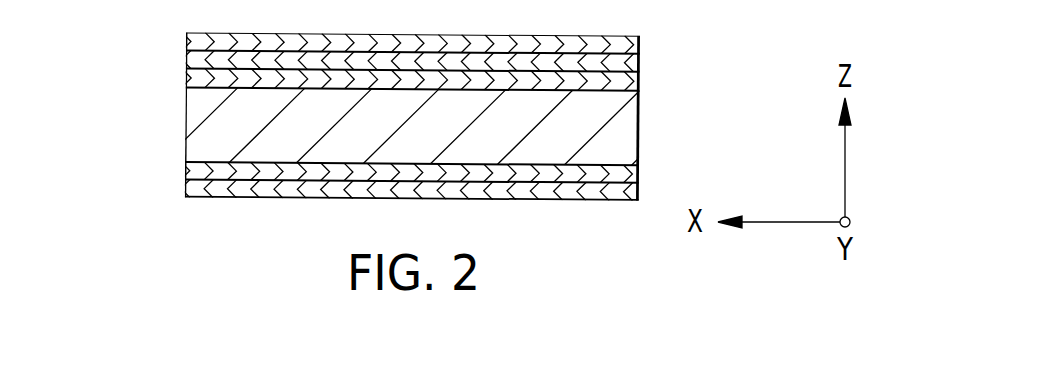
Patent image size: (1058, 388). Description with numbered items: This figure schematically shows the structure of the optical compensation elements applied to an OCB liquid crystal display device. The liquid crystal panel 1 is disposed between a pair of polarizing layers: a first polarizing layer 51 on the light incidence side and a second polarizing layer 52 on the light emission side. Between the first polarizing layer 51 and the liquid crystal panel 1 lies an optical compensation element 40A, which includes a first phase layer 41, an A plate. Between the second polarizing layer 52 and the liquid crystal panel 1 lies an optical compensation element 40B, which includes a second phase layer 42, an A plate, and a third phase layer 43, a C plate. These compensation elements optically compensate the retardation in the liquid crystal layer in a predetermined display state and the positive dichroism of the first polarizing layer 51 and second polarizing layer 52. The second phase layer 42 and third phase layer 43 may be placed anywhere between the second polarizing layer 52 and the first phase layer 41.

The liquid crystal panel 1 is at (627, 128).
The optical compensation element 40B is at (108, 43).
The second polarizing layer 52 is at (186, 40).
The third phase layer 43 is at (186, 60).
The second phase layer 42 is at (186, 78).
The optical compensation element 40A is at (186, 170).
The first phase layer 41 is at (378, 163).
The first polarizing layer 51 is at (186, 190).